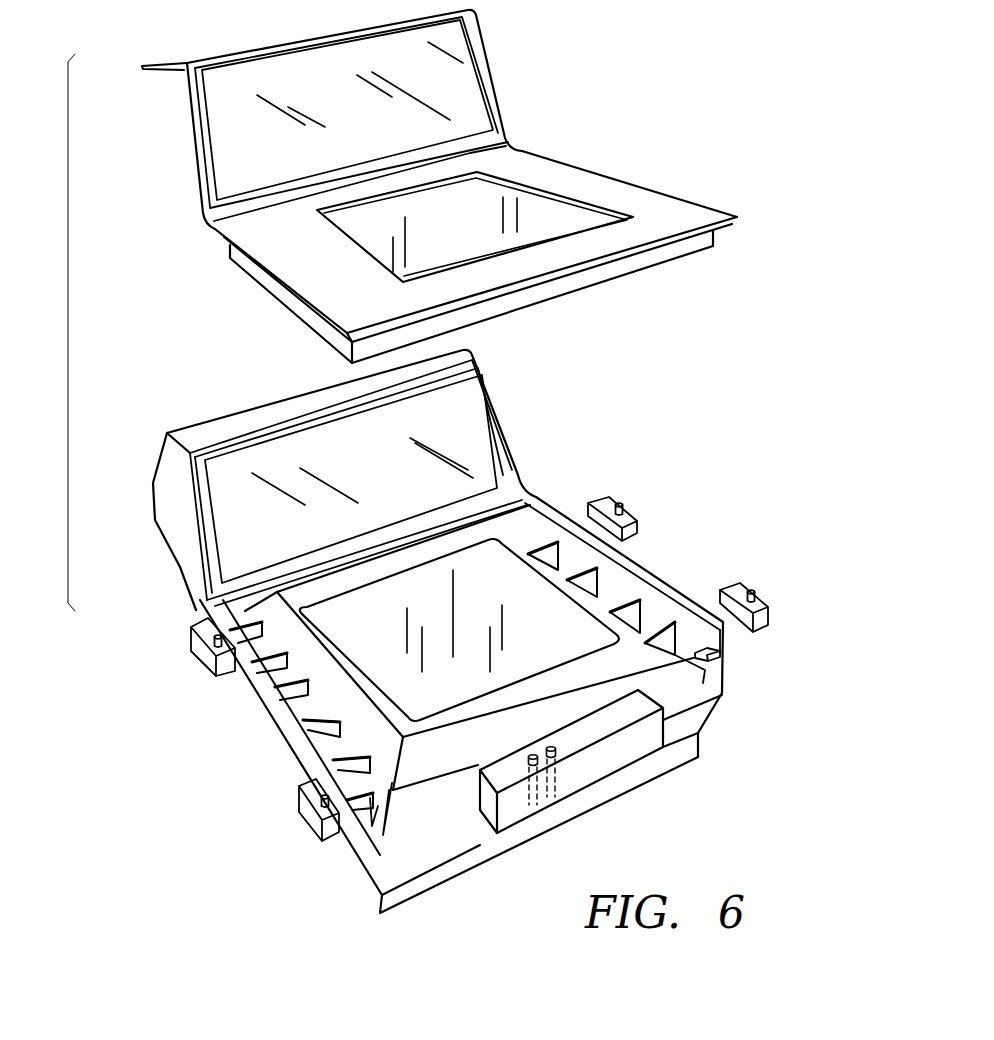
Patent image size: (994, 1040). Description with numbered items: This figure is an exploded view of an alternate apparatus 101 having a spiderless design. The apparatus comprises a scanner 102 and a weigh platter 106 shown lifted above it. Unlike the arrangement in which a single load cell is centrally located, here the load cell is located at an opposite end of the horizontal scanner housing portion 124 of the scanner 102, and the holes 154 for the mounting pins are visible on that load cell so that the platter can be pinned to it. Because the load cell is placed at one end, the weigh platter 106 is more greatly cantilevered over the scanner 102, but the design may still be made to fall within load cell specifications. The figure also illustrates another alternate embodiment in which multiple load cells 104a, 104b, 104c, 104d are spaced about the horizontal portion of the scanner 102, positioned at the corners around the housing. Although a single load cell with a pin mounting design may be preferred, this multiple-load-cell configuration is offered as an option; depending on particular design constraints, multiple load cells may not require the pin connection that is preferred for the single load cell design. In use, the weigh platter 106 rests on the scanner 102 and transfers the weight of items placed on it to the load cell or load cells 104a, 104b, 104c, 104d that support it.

The alternate apparatus 101 is at (732, 298).
The weigh platter 106 is at (602, 172).
The scanner 102 is at (245, 710).
The load cell 104a is at (592, 497).
The load cell 104b is at (722, 589).
The load cell 104c is at (306, 814).
The load cell 104d is at (198, 656).
The horizontal scanner housing portion 124 is at (424, 793).
The holes for the pins 154 is at (552, 745).